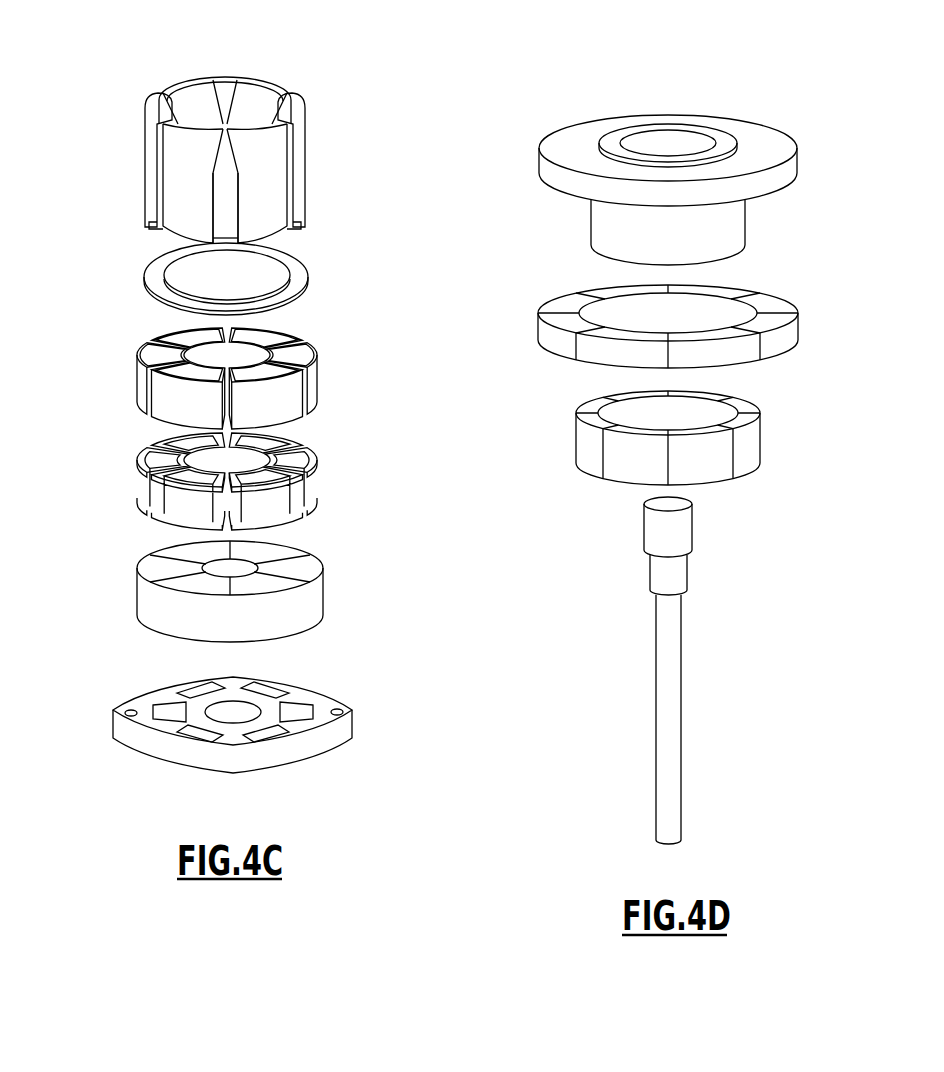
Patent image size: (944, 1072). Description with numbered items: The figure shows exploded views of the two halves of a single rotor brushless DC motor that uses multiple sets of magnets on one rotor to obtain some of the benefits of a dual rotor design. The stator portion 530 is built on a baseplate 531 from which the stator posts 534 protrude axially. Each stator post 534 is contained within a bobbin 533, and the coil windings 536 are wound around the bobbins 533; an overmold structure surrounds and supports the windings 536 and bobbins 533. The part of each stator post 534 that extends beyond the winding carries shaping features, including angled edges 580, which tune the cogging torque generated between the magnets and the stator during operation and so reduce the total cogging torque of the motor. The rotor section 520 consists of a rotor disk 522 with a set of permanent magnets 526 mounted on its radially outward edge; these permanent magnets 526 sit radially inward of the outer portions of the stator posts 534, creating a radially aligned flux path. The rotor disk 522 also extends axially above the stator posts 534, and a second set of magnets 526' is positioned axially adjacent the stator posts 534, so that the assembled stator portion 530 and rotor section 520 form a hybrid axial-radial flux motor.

In FIG. 4C, the stator portion 530 is at (96, 77).
In FIG. 4C, the stator post 534 is at (197, 82).
In FIG. 4C, the angled edge 580 is at (240, 175).
In FIG. 4C, the coil windings 536 is at (317, 377).
In FIG. 4C, the bobbin 533 is at (313, 460).
In FIG. 4C, the baseplate 531 is at (342, 742).
In FIG. 4D, the rotor section 520 is at (798, 48).
In FIG. 4D, the rotor disk 522 is at (572, 153).
In FIG. 4D, the second set of magnets 526' is at (699, 320).
In FIG. 4D, the permanent magnets 526 is at (704, 438).